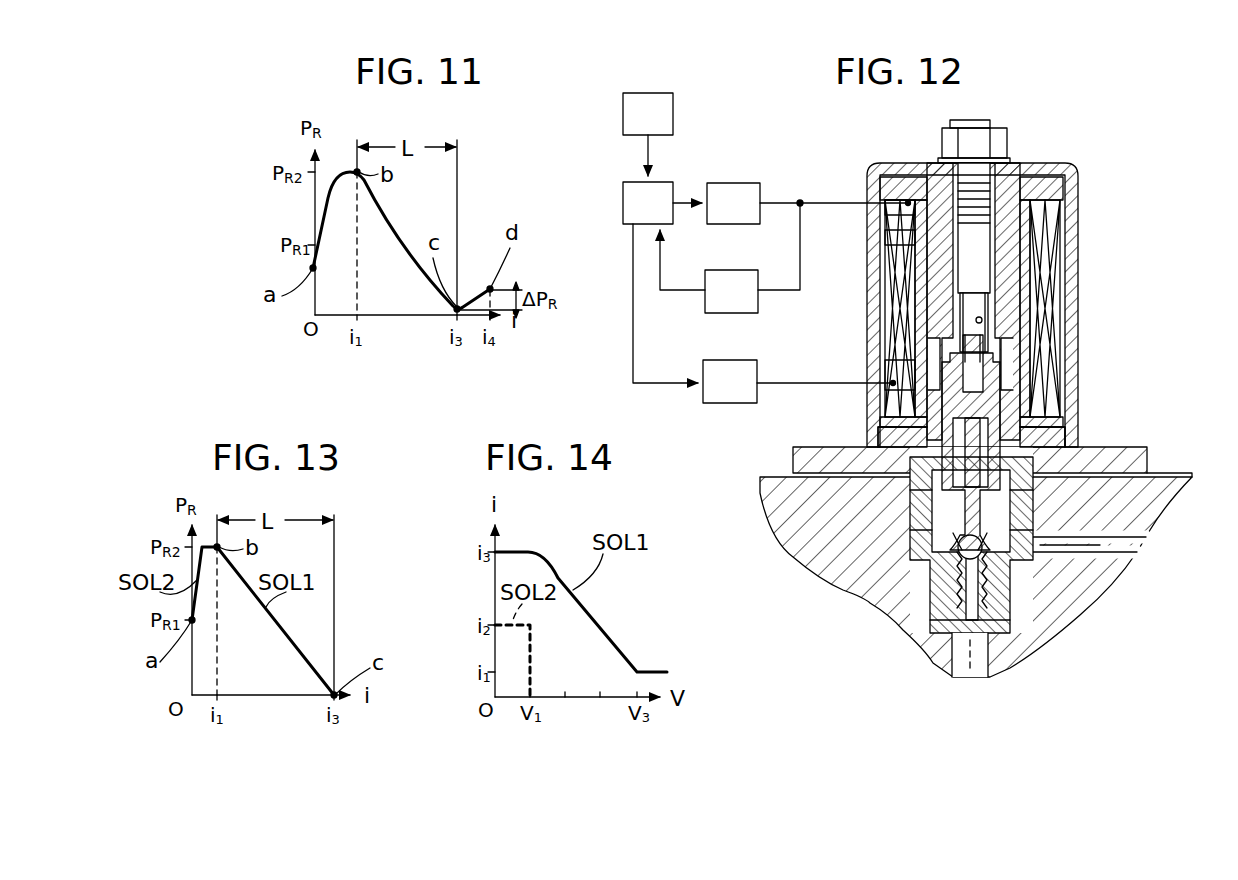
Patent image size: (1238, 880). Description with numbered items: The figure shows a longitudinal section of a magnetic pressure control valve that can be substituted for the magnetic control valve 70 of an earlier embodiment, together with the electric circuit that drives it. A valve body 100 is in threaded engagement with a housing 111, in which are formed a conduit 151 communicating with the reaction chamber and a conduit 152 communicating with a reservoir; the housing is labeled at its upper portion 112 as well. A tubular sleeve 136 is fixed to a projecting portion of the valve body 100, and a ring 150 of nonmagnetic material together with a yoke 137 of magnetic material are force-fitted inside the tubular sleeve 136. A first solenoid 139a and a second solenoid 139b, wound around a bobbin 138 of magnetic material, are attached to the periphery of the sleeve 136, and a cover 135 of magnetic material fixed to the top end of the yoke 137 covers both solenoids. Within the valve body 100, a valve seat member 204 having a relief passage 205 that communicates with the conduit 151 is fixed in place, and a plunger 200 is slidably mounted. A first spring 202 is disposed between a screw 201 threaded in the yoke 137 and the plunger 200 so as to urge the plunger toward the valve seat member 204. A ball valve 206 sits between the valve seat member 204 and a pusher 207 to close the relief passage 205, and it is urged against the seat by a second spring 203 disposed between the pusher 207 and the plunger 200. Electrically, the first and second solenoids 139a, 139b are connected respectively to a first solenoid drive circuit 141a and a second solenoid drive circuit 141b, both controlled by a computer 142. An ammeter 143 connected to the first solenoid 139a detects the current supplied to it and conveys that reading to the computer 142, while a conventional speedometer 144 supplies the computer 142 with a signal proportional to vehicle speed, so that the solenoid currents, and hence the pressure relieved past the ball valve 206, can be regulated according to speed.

The magnetic control valve 70 is at (1112, 135).
The valve body 100 is at (1140, 458).
The housing 111 is at (1170, 490).
The housing cover 112 is at (1110, 500).
The cover 135 is at (1070, 188).
The tubular sleeve 136 is at (1005, 303).
The yoke 137 is at (1022, 272).
The bobbin 138 is at (878, 185).
The first solenoid 139a is at (905, 213).
The second solenoid 139b is at (893, 248).
The first solenoid drive circuit 141a is at (727, 188).
The second solenoid drive circuit 141b is at (730, 395).
The computer 142 is at (672, 216).
The ammeter 143 is at (712, 300).
The speedometer 144 is at (668, 108).
The ring 150 is at (930, 372).
The conduit 151 is at (965, 668).
The conduit 152 is at (1125, 544).
The plunger 200 is at (1010, 372).
The screw 201 is at (985, 245).
The first spring 202 is at (983, 320).
The second spring 203 is at (1002, 440).
The valve seat member 204 is at (993, 550).
The relief passage 205 is at (990, 582).
The ball valve 206 is at (958, 558).
The pusher 207 is at (955, 545).